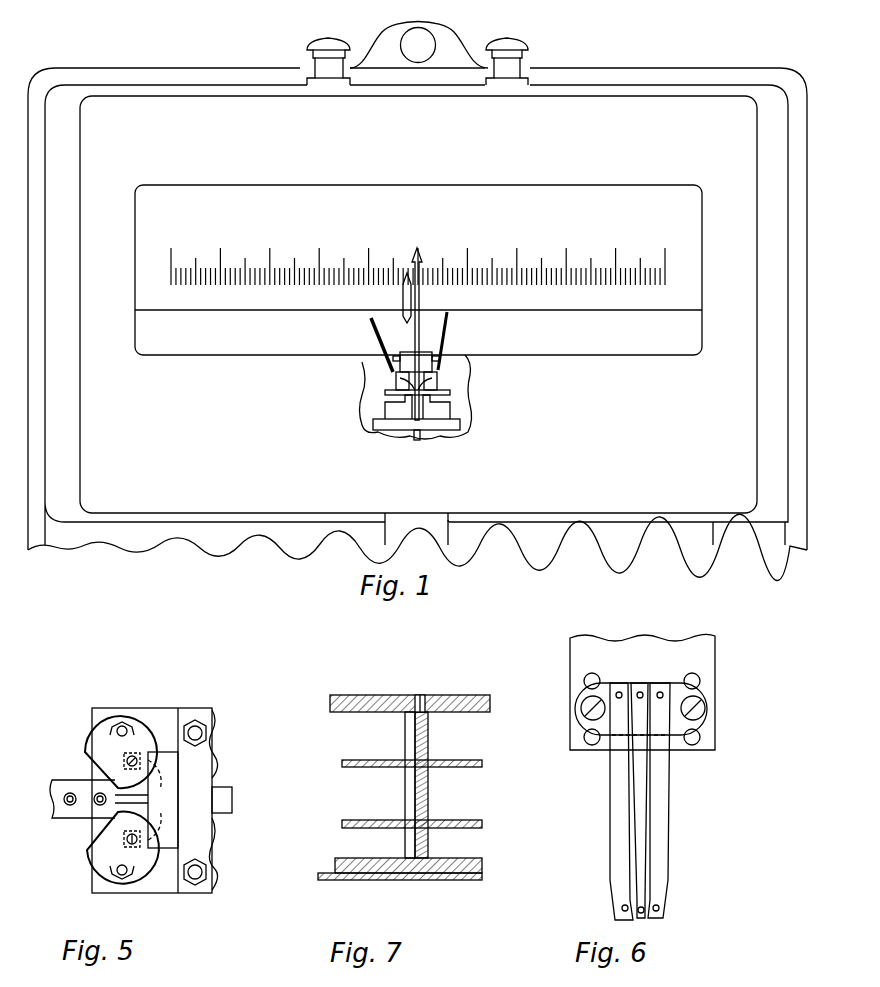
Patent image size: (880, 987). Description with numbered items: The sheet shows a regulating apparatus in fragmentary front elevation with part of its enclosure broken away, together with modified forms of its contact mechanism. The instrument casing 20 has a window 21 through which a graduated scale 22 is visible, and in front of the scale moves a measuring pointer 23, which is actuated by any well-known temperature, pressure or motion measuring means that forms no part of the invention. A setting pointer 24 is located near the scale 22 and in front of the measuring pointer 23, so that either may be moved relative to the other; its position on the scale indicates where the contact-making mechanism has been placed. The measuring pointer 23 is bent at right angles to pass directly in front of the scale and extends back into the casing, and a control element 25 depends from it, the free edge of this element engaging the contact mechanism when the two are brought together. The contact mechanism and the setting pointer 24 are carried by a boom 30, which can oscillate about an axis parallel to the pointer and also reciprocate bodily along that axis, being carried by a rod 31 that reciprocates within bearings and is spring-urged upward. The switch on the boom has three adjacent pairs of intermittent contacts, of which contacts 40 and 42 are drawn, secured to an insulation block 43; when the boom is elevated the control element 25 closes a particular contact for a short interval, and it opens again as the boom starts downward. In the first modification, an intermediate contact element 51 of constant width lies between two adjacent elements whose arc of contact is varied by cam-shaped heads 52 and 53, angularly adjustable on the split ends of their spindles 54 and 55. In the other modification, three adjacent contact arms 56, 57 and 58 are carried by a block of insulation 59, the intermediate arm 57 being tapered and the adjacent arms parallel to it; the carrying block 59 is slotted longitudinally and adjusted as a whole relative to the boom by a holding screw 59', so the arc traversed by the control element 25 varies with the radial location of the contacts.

In FIG. 1, the instrument casing 20 is at (767, 105).
In FIG. 1, the window 21 is at (683, 348).
In FIG. 1, the graduated scale 22 is at (666, 280).
In FIG. 1, the measuring pointer 23 is at (403, 288).
In FIG. 1, the setting pointer 24 is at (421, 302).
In FIG. 1, the control element 25 is at (410, 330).
In FIG. 1, the boom 30 is at (450, 426).
In FIG. 1, the rod 31 is at (416, 440).
In FIG. 1, the intermittent contact 40 is at (392, 362).
In FIG. 1, the intermittent contact 42 is at (438, 356).
In FIG. 1, the insulation block 43 is at (385, 410).
In FIG. 5, the intermediate contact element 51 is at (115, 805).
In FIG. 5, the cam-shaped head 52 is at (100, 850).
In FIG. 5, the cam-shaped head 53 is at (98, 750).
In FIG. 7, the cam-shaped head 53 is at (483, 711).
In FIG. 5, the spindle 54 is at (135, 843).
In FIG. 5, the spindle 55 is at (135, 758).
In FIG. 7, the spindle 55 is at (418, 695).
In FIG. 6, the contact arm 56 is at (617, 862).
In FIG. 6, the intermediate contact arm 57 is at (640, 892).
In FIG. 6, the contact arm 58 is at (656, 898).
In FIG. 6, the block of insulation 59 is at (663, 692).
In FIG. 6, the holding screw 59' is at (672, 712).